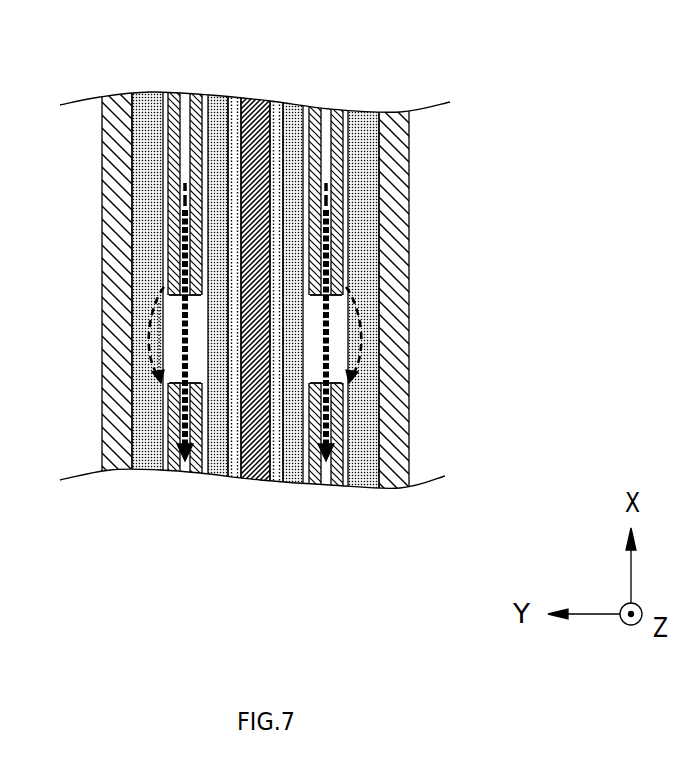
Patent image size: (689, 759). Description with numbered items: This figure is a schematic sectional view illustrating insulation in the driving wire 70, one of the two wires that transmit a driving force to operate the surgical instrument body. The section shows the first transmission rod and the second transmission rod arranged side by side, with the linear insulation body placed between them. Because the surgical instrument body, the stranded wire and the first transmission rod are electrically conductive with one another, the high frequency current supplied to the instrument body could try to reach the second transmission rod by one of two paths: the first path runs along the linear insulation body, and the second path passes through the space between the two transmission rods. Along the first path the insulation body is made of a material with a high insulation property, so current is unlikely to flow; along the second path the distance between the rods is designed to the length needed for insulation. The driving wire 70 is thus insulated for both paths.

The driving wire 70 is at (189, 68).